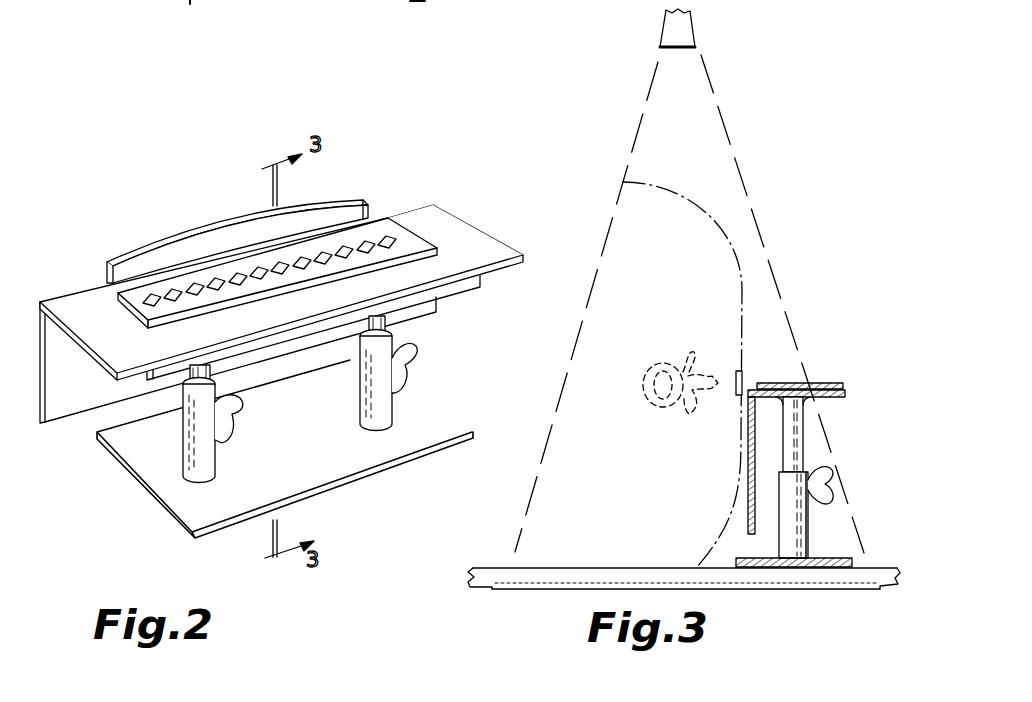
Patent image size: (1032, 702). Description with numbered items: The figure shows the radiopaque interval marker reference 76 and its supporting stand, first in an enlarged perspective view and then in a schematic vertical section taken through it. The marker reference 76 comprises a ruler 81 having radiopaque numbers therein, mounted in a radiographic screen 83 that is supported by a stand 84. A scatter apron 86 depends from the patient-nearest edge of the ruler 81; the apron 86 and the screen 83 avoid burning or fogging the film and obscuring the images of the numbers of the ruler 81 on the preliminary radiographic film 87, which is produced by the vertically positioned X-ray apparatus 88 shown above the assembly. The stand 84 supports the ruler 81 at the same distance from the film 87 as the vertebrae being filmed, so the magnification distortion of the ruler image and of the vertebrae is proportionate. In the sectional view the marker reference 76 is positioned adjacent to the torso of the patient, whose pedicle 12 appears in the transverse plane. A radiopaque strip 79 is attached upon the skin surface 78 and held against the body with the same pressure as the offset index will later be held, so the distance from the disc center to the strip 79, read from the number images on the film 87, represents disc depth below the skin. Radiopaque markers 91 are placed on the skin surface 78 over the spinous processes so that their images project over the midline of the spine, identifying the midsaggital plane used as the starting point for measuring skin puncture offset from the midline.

In FIG. 3, the pedicle 12 is at (690, 367).
In FIG. 2, the radiopaque interval marker reference 76 is at (397, 209).
In FIG. 3, the radiopaque interval marker reference 76 is at (826, 382).
In FIG. 3, the skin surface 78 is at (738, 333).
In FIG. 2, the radiopaque strip 79 is at (178, 252).
In FIG. 2, the ruler 81 is at (352, 240).
In FIG. 3, the ruler 81 is at (774, 383).
In FIG. 2, the radiographic screen 83 is at (445, 228).
In FIG. 3, the radiographic screen 83 is at (849, 391).
In FIG. 2, the stand 84 is at (370, 398).
In FIG. 3, the stand 84 is at (807, 521).
In FIG. 3, the scatter apron 86 is at (748, 480).
In FIG. 3, the preliminary radiographic film 87 is at (637, 587).
In FIG. 3, the X-ray apparatus 88 is at (677, 32).
In FIG. 3, the radiopaque markers 91 is at (739, 371).